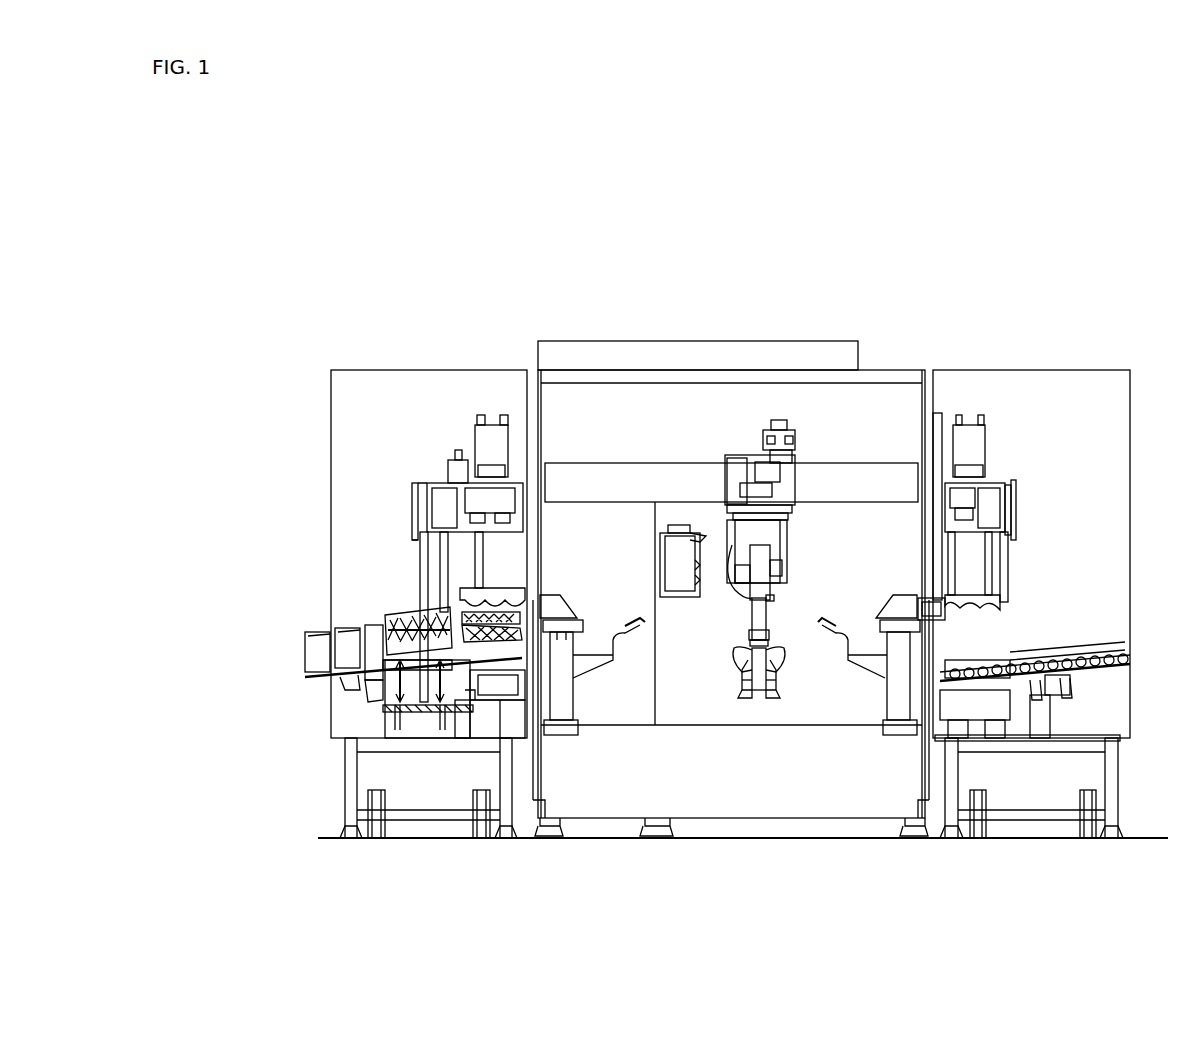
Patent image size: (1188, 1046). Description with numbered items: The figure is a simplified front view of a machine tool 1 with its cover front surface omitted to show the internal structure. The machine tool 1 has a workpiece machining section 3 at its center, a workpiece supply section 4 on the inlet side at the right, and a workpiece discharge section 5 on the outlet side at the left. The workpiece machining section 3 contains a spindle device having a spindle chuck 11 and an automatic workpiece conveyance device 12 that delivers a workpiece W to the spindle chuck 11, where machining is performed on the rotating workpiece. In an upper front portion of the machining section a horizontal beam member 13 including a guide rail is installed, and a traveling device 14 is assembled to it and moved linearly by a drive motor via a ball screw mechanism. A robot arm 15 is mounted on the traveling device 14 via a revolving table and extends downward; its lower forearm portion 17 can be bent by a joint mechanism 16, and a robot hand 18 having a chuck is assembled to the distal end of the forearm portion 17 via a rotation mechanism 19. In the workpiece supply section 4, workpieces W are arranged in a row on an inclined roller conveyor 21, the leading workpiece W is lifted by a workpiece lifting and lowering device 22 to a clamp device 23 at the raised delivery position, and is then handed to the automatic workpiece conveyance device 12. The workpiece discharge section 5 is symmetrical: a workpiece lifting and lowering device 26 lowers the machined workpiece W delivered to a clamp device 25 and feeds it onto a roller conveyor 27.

The machine tool 1 is at (808, 279).
The workpiece machining section 3 is at (878, 366).
The workpiece supply section 4 is at (1040, 362).
The workpiece discharge section 5 is at (406, 366).
The spindle chuck 11 is at (668, 552).
The automatic workpiece conveyance device 12 is at (756, 436).
The horizontal beam member 13 is at (590, 485).
The traveling device 14 is at (730, 478).
The robot arm 15 is at (788, 540).
The joint mechanism 16 is at (788, 572).
The forearm portion 17 is at (765, 612).
The robot hand 18 is at (742, 680).
The rotation mechanism 19 is at (745, 645).
The roller conveyor 21 is at (1112, 686).
The workpiece lifting and lowering device 22 is at (978, 730).
The clamp device 23 is at (937, 600).
The clamp device 25 is at (532, 598).
The workpiece lifting and lowering device 26 is at (500, 732).
The roller conveyor 27 is at (345, 682).
The workpiece W is at (486, 598).